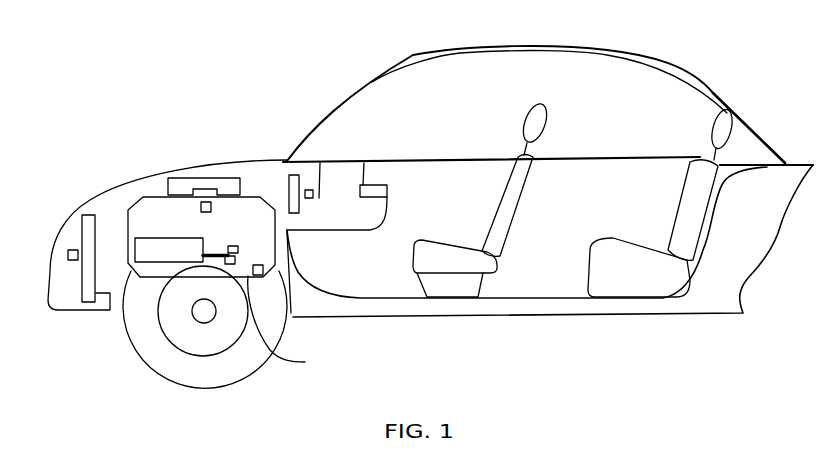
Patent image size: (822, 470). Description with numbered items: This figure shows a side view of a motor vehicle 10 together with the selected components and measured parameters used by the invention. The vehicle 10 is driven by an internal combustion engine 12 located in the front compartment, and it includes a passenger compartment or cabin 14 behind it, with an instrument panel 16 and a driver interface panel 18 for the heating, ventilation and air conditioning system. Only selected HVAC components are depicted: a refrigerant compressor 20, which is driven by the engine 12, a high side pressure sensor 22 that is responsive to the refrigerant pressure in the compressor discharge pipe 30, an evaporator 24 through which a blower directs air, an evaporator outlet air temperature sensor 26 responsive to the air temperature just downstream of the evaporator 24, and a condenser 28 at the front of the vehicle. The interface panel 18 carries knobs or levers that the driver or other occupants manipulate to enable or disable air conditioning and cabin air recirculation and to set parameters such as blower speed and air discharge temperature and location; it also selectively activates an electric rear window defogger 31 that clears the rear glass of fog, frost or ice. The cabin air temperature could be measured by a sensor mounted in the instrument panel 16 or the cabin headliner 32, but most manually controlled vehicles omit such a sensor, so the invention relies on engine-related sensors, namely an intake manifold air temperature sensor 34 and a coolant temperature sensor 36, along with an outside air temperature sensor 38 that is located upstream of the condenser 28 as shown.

The motor vehicle 10 is at (331, 99).
The internal combustion engine 12 is at (133, 203).
The passenger compartment 14 is at (540, 275).
The instrument panel 16 is at (364, 163).
The driver interface panel 18 is at (387, 191).
The refrigerant compressor 20 is at (155, 258).
The high side pressure sensor 22 is at (228, 327).
The evaporator 24 is at (290, 178).
The evaporator outlet air temperature sensor 26 is at (318, 200).
The condenser 28 is at (68, 218).
The compressor discharge pipe 30 is at (235, 249).
The electric rear window defogger 31 is at (737, 111).
The cabin headliner 32 is at (412, 60).
The intake manifold air temperature sensor 34 is at (201, 207).
The coolant temperature sensor 36 is at (263, 270).
The outside air temperature sensor 38 is at (72, 260).